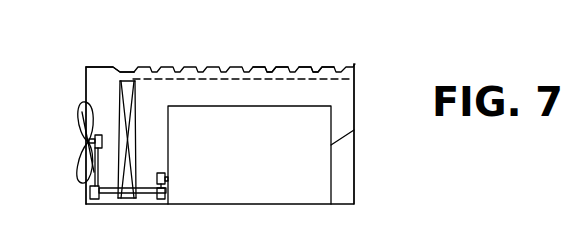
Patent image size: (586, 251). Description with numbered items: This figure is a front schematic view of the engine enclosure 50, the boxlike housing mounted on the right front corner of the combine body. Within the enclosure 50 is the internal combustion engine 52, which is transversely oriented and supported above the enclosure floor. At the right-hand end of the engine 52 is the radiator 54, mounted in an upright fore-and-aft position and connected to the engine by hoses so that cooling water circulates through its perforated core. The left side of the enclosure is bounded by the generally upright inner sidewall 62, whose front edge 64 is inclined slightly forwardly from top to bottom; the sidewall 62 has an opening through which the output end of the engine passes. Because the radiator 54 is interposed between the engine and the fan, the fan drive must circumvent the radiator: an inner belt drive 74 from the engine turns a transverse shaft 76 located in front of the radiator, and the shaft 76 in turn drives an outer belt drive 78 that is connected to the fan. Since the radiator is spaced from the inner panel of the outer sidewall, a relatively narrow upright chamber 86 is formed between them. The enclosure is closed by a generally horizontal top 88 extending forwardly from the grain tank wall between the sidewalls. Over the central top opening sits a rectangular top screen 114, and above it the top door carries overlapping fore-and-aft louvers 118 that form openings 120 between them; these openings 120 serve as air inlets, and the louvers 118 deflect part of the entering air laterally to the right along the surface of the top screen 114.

The engine enclosure 50 is at (205, 50).
The internal combustion engine 52 is at (256, 145).
The radiator 54 is at (138, 118).
The inner sidewall 62 is at (357, 96).
The front edge 64 is at (86, 85).
The inner belt drive 74 is at (167, 192).
The transverse shaft 76 is at (143, 196).
The outer belt drive 78 is at (95, 180).
The upright chamber 86 is at (105, 86).
The top 88 is at (148, 56).
The top screen 114 is at (200, 80).
The louvers 118 is at (287, 68).
The openings 120 is at (328, 70).